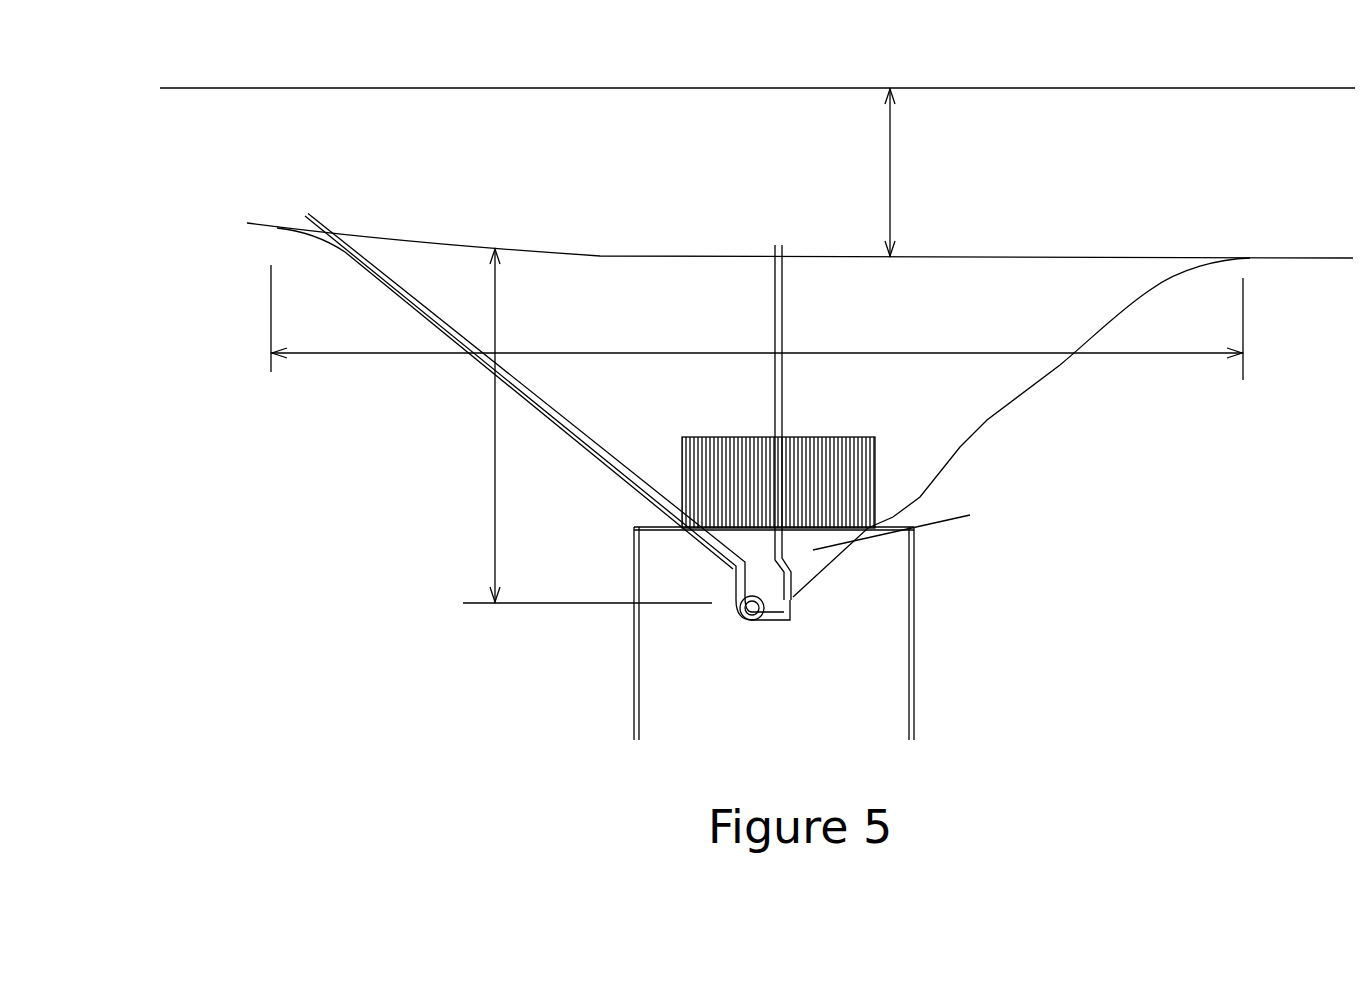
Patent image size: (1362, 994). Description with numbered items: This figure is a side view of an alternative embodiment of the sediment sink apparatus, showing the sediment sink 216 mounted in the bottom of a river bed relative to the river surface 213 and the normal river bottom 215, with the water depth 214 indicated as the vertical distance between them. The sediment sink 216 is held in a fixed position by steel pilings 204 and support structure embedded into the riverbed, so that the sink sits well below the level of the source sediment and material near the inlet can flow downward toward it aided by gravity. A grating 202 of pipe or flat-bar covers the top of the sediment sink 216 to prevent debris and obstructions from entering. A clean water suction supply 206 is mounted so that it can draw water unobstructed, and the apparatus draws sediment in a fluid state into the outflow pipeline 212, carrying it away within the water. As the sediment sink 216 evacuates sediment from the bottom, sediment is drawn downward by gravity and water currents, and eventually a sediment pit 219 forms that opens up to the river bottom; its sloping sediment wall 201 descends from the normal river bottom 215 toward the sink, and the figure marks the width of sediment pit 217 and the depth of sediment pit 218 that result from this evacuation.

The sediment wall 201 is at (987, 420).
The grating 202 is at (788, 452).
The pilings 204 is at (912, 633).
The clean water suction supply 206 is at (775, 248).
The outflow pipeline 212 is at (305, 205).
The river surface 213 is at (800, 87).
The water depth 214 is at (893, 135).
The normal river bottom 215 is at (1290, 258).
The sediment sink 216 is at (916, 526).
The width of sediment pit 217 is at (453, 355).
The depth of sediment pit 218 is at (490, 502).
The sediment pit 219 is at (757, 322).